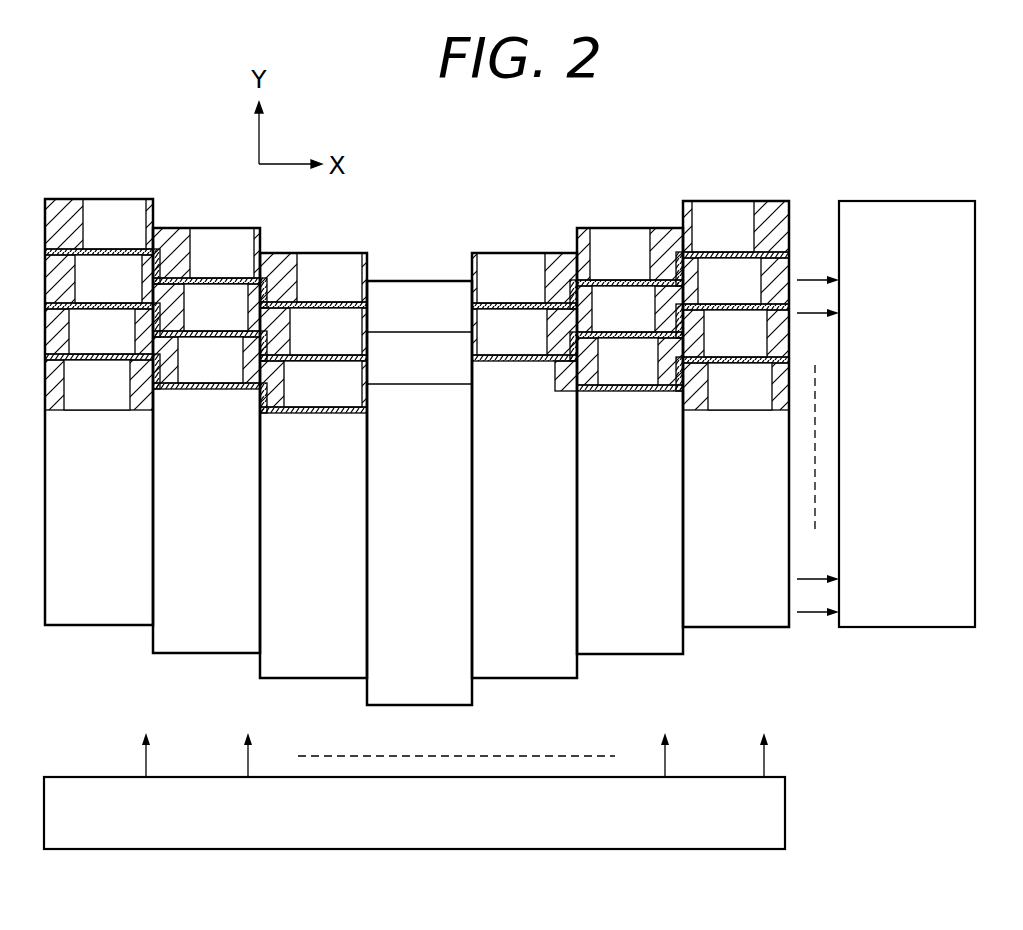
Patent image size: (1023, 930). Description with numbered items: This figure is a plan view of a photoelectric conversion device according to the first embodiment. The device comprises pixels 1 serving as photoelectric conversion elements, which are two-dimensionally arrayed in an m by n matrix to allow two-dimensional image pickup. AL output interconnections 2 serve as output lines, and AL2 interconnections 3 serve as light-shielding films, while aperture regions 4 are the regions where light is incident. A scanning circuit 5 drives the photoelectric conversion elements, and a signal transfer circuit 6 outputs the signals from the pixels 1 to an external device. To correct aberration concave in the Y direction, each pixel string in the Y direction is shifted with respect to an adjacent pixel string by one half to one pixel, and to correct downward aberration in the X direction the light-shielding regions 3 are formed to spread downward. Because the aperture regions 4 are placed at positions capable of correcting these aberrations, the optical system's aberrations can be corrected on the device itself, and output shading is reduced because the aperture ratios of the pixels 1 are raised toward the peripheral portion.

The pixel 1 is at (753, 197).
The AL output interconnection 2 is at (791, 255).
The AL2 interconnection 3 is at (777, 209).
The aperture region 4 is at (716, 209).
The scanning circuit 5 is at (787, 802).
The signal transfer circuit 6 is at (946, 201).